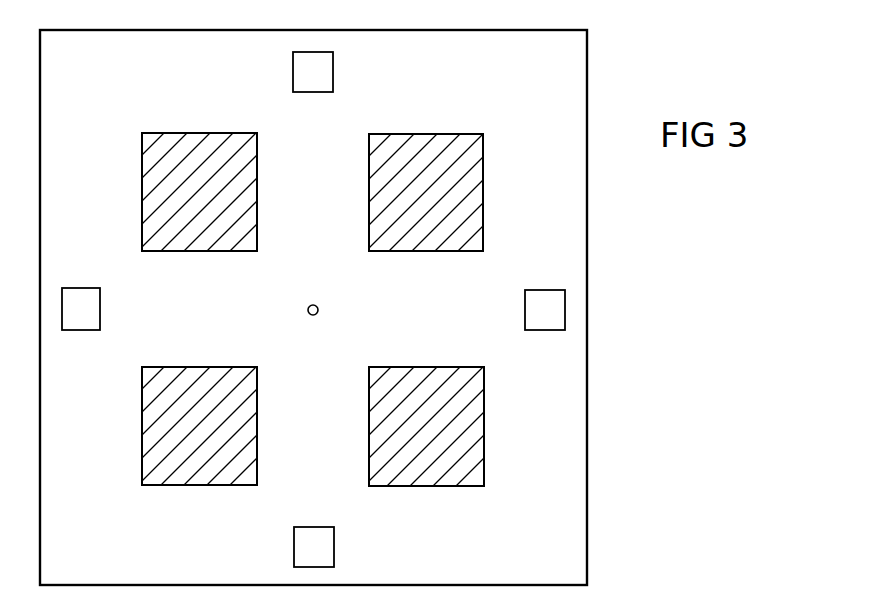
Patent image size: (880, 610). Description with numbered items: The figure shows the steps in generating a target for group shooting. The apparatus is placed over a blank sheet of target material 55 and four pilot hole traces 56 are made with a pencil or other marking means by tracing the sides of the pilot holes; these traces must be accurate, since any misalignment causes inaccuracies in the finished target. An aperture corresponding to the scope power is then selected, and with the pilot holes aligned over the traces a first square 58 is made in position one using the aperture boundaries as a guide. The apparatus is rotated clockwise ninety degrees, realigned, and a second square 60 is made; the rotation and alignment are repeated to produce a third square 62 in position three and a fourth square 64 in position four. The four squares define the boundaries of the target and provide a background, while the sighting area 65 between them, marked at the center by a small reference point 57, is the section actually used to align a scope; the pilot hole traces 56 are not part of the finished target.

The target material 55 is at (107, 86).
The pilot hole traces 56 is at (323, 86).
The center reference point 57 is at (317, 314).
The first square 58 is at (212, 158).
The second square 60 is at (424, 167).
The third square 62 is at (419, 468).
The fourth square 64 is at (197, 453).
The sighting area 65 is at (330, 150).